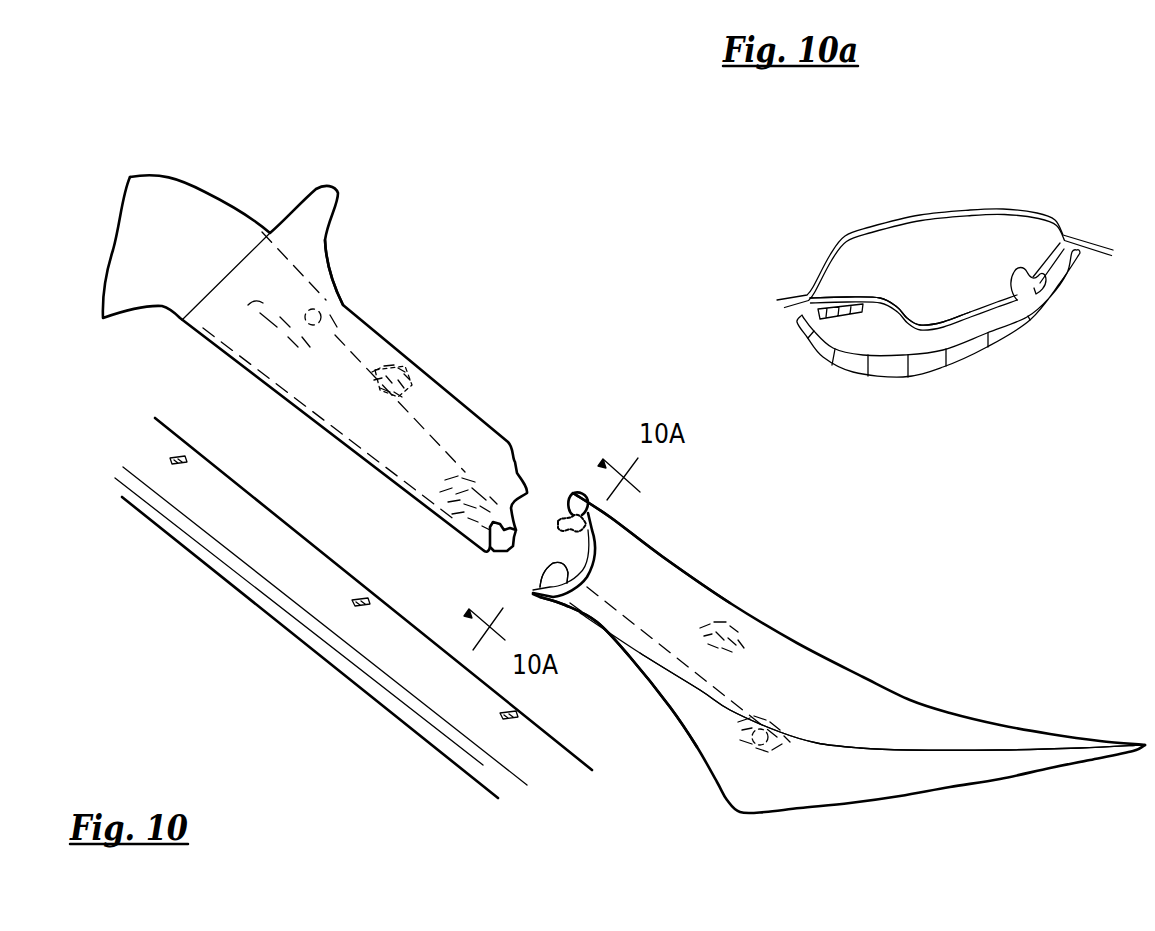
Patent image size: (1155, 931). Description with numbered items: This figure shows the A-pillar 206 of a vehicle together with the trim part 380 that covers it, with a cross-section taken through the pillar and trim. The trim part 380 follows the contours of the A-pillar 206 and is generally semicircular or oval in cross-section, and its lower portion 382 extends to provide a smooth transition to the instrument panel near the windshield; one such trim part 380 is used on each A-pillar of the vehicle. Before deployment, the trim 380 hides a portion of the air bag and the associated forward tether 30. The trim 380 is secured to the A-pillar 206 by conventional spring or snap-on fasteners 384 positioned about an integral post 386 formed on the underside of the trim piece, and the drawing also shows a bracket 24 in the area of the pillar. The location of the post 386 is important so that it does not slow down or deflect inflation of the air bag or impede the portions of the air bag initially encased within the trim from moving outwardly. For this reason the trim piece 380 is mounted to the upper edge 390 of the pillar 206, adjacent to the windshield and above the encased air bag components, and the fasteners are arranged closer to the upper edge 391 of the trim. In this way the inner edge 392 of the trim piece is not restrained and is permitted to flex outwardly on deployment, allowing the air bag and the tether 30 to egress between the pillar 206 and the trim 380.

In FIG. 10, the mounting bracket 24 is at (237, 232).
In FIG. 10, the forward tether 30 is at (623, 632).
In FIG. 10, the A-pillar 206 is at (265, 614).
In FIG. 10A, the A-pillar 206 is at (942, 320).
In FIG. 10, the trim part 380 is at (318, 250).
In FIG. 10A, the trim part 380 is at (937, 366).
In FIG. 10, the lower portion of the trim 382 is at (983, 740).
In FIG. 10, the spring or snap-on fastener 384 is at (405, 372).
In FIG. 10, the integral post 386 is at (572, 535).
In FIG. 10, the upper edge of the pillar 390 is at (276, 533).
In FIG. 10A, the upper edge of the pillar 390 is at (1050, 262).
In FIG. 10, the upper edge of the trim 391 is at (653, 571).
In FIG. 10, the inner edge of the trim 392 is at (588, 627).